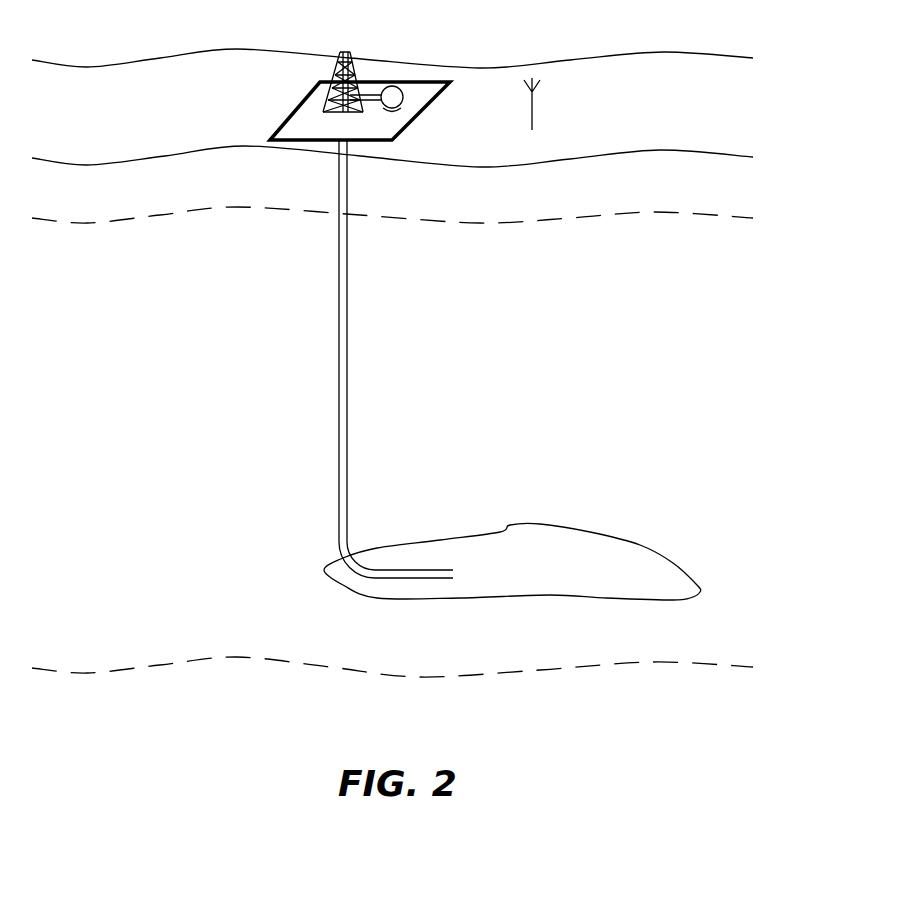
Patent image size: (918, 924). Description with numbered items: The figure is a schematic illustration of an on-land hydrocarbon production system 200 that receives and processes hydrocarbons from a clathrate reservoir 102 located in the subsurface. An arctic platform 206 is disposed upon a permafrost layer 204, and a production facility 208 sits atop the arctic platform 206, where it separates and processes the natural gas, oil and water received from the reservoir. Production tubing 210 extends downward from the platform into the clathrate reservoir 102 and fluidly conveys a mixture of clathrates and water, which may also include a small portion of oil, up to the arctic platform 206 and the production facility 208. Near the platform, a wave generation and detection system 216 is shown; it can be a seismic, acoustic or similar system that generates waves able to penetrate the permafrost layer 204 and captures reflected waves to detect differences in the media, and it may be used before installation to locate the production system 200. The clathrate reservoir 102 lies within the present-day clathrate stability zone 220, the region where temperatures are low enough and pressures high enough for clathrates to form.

The clathrate reservoir 102 is at (680, 568).
The hydrocarbon production system 200 is at (187, 751).
The permafrost layer 204 is at (655, 170).
The arctic platform 206 is at (393, 140).
The production facility 208 is at (360, 82).
The production tubing 210 is at (338, 418).
The wave generation and detection system 216 is at (532, 130).
The clathrate stability zone 220 is at (138, 590).